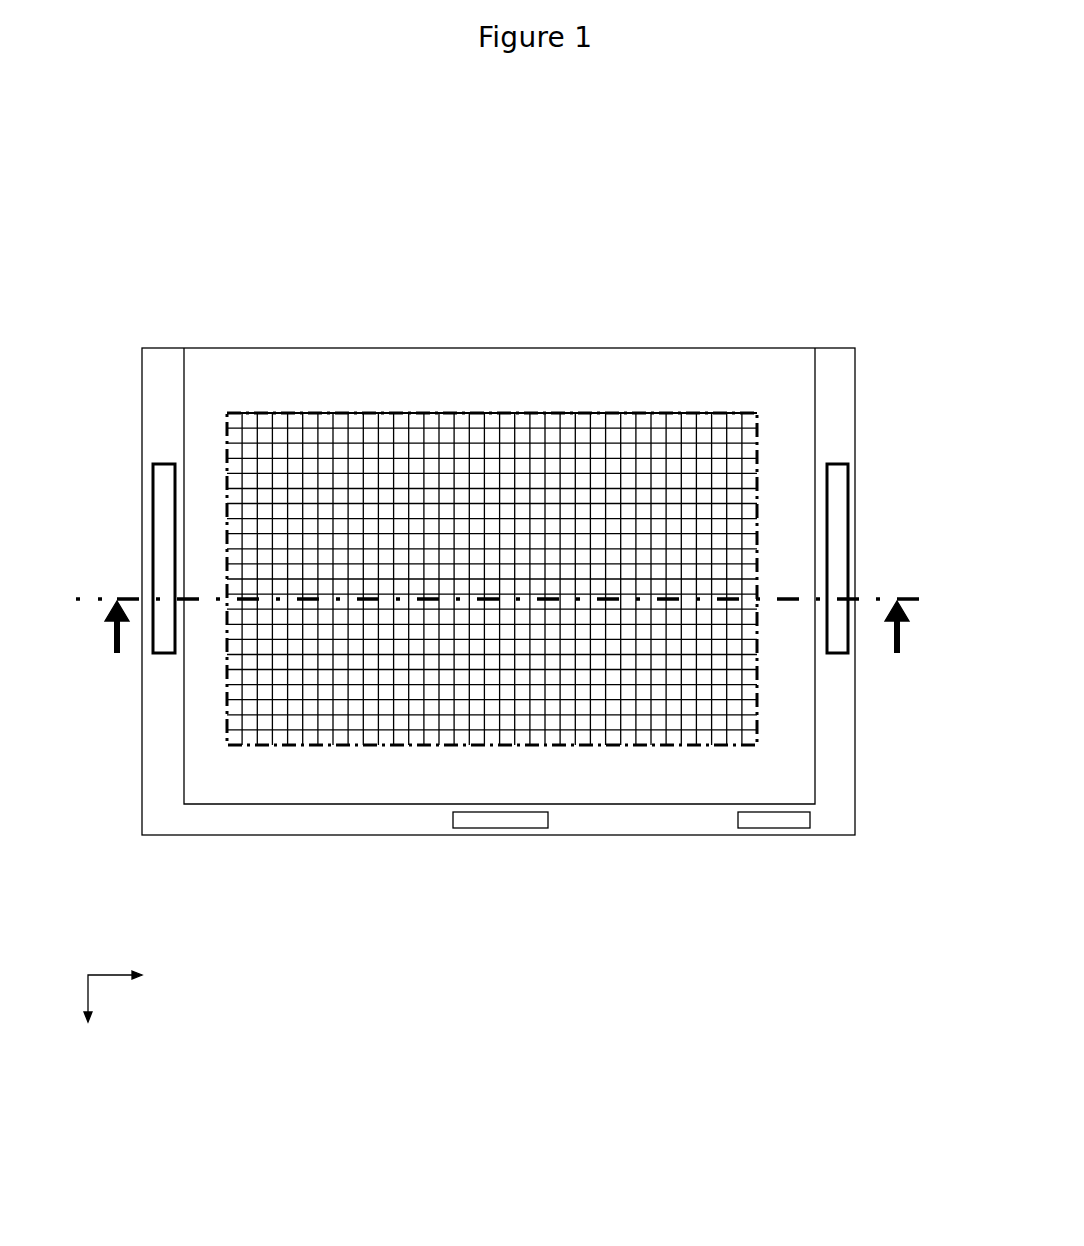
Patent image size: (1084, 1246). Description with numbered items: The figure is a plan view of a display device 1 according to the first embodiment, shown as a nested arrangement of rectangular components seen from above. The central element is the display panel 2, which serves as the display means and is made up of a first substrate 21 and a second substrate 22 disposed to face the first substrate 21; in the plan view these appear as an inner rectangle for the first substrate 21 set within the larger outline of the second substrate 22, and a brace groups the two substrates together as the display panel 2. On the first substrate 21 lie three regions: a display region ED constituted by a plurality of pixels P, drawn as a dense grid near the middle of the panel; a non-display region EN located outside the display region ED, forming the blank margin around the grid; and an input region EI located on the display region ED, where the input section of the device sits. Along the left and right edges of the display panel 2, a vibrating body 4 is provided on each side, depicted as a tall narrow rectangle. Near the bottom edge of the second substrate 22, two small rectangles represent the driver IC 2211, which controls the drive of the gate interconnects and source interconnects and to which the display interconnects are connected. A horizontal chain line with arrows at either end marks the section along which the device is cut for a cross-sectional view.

The display device 1 is at (541, 204).
The display panel 2 is at (732, 910).
The first substrate 21 is at (648, 806).
The second substrate 22 is at (678, 836).
The driver IC 2211 is at (475, 824).
The vibrating body 4 is at (158, 585).
The pixel P is at (320, 466).
The input region EI is at (481, 412).
The non-display region EN is at (622, 382).
The display region ED is at (704, 412).